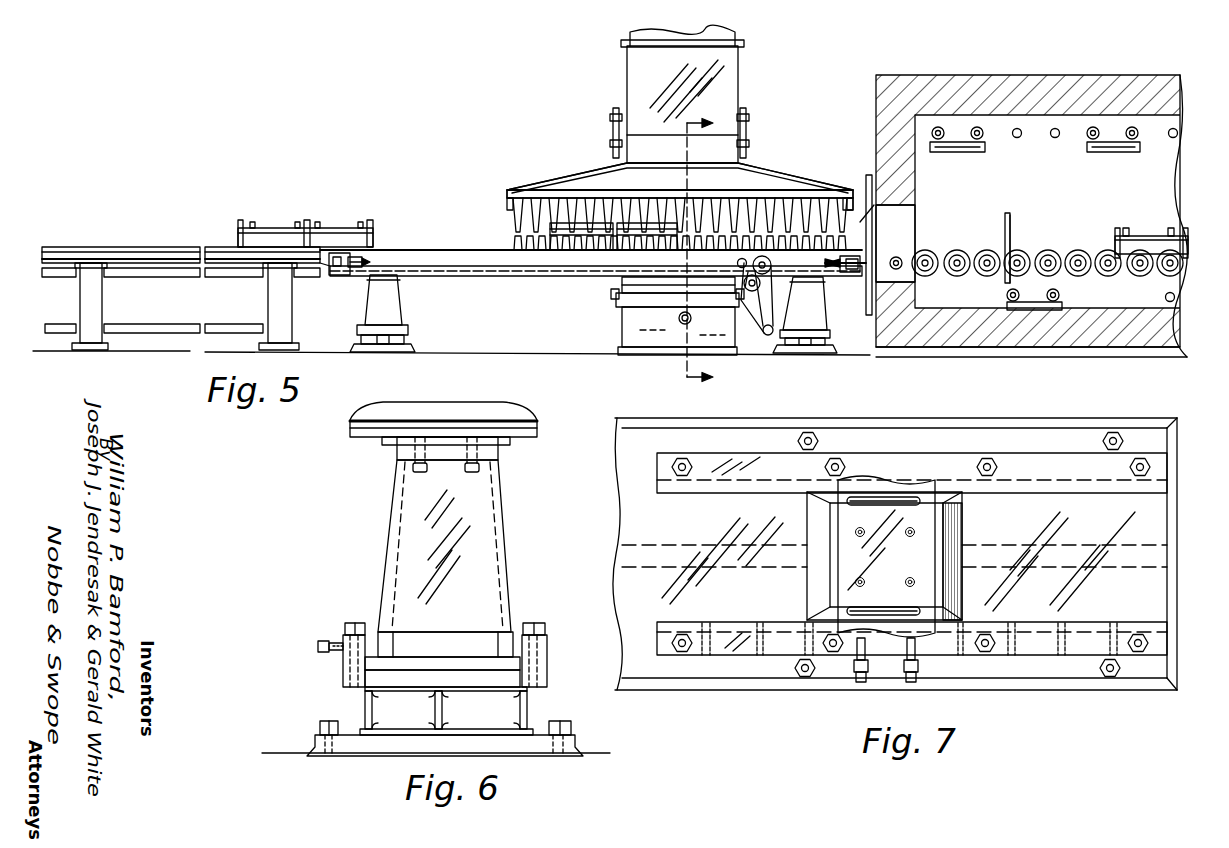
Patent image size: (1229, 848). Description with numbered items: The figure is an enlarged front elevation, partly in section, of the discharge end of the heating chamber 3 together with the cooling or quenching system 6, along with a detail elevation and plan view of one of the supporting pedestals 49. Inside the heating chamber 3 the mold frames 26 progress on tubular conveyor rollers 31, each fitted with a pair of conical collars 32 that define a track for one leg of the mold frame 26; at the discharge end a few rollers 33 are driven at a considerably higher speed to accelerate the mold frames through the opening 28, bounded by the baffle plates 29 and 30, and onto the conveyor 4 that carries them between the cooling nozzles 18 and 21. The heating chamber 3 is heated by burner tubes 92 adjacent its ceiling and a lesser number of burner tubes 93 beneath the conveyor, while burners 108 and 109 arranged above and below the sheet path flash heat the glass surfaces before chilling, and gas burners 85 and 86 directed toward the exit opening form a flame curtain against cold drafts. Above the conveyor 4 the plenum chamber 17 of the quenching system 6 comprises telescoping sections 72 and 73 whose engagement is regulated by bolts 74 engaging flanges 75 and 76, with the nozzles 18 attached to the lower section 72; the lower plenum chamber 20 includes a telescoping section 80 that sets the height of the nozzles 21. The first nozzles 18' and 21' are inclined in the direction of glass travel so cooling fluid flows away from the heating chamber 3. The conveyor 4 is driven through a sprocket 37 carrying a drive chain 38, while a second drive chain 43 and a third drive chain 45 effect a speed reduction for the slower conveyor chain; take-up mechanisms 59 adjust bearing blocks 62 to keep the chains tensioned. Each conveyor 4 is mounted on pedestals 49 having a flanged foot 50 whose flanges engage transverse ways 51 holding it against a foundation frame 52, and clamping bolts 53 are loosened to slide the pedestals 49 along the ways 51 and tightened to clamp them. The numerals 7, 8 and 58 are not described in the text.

In FIG. 5, the heating chamber 3 is at (1082, 82).
In FIG. 5, the conveyor 4 is at (531, 277).
In FIG. 5, the quenching system 6 is at (497, 175).
In FIG. 5, the conveyor table 7 is at (149, 247).
In FIG. 5, the section line 8 is at (719, 120).
In FIG. 5, the plenum chamber 17 is at (622, 96).
In FIG. 5, the nozzles 18 is at (654, 198).
In FIG. 5, the nozzle 18' is at (837, 173).
In FIG. 5, the lower plenum chamber 20 is at (616, 327).
In FIG. 5, the nozzles 21 is at (657, 224).
In FIG. 5, the nozzle 21' is at (848, 284).
In FIG. 5, the mold frames 26 is at (273, 222).
In FIG. 5, the opening 28 is at (914, 214).
In FIG. 5, the baffle plate 29 is at (878, 261).
In FIG. 5, the baffle plate 30 is at (868, 184).
In FIG. 5, the tubular conveyor rollers 31 is at (1137, 277).
In FIG. 5, the conical collars 32 is at (987, 252).
In FIG. 5, the rollers 33 is at (957, 277).
In FIG. 5, the sprocket 37 is at (772, 265).
In FIG. 5, the drive chain 38 is at (751, 302).
In FIG. 5, the second drive chain 43 is at (746, 277).
In FIG. 5, the third drive chain 45 is at (737, 263).
In FIG. 5, the pedestals 49 is at (389, 305).
In FIG. 6, the pedestals 49 is at (410, 527).
In FIG. 7, the pedestals 49 is at (950, 536).
In FIG. 6, the flanged foot 50 is at (422, 662).
In FIG. 6, the transverse ways 51 is at (343, 660).
In FIG. 7, the transverse ways 51 is at (773, 463).
In FIG. 6, the foundation frame 52 is at (345, 678).
In FIG. 7, the foundation frame 52 is at (633, 597).
In FIG. 6, the clamping bolts 53 is at (316, 644).
In FIG. 7, the clamping bolts 53 is at (907, 683).
In FIG. 6, the cap 58 is at (372, 431).
In FIG. 5, the take-up mechanisms 59 is at (350, 276).
In FIG. 5, the bearing blocks 62 is at (337, 276).
In FIG. 5, the telescoping section 72 is at (735, 174).
In FIG. 5, the telescoping section 73 is at (740, 93).
In FIG. 5, the bolts 74 is at (750, 135).
In FIG. 5, the flange 75 is at (750, 146).
In FIG. 5, the flange 76 is at (748, 124).
In FIG. 5, the telescoping section 80 is at (620, 301).
In FIG. 5, the gas burner 85 is at (875, 230).
In FIG. 5, the gas burner 86 is at (875, 248).
In FIG. 5, the burner tubes 92 is at (977, 141).
In FIG. 5, the burner tubes 93 is at (1062, 296).
In FIG. 5, the burner 108 is at (1009, 214).
In FIG. 5, the burner 109 is at (1012, 240).